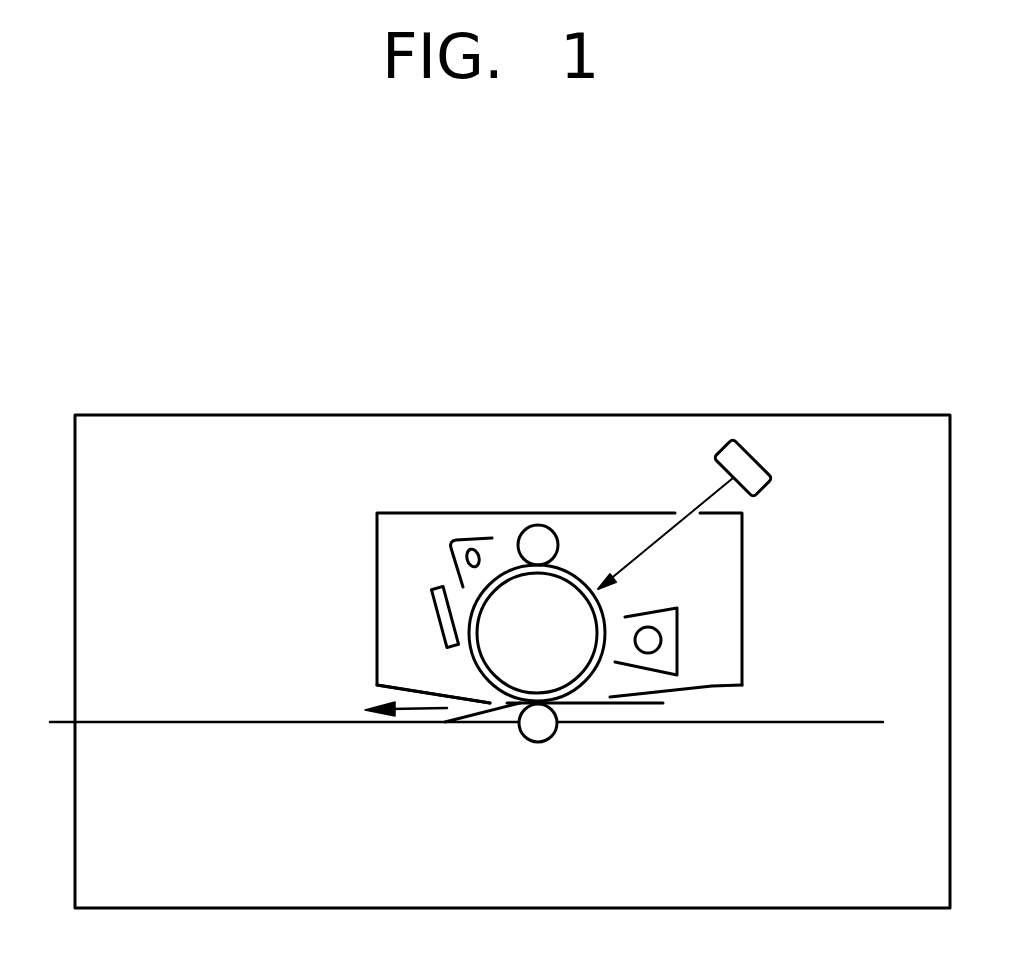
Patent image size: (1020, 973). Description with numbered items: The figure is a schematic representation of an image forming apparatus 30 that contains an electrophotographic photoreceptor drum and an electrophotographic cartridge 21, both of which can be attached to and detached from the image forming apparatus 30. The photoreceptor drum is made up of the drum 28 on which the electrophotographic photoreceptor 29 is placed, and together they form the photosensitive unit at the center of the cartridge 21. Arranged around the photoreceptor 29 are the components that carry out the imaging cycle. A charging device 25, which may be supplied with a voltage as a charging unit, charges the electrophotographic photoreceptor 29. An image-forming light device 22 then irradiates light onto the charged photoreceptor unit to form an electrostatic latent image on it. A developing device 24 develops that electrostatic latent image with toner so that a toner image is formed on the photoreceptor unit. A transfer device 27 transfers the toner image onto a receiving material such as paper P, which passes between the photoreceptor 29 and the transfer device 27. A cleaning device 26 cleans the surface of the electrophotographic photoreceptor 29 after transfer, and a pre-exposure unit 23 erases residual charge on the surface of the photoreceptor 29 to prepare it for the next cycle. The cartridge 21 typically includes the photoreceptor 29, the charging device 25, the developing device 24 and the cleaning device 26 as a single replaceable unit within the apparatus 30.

The image forming apparatus 30 is at (635, 414).
The electrophotographic cartridge 21 is at (456, 511).
The image-forming light device 22 is at (768, 470).
The pre-exposure unit 23 is at (450, 544).
The developing device 24 is at (677, 632).
The charging device 25 is at (550, 529).
The cleaning device 26 is at (432, 600).
The transfer device 27 is at (543, 743).
The drum 28 is at (512, 688).
The electrophotographic photoreceptor 29 is at (470, 662).
The paper P is at (643, 704).